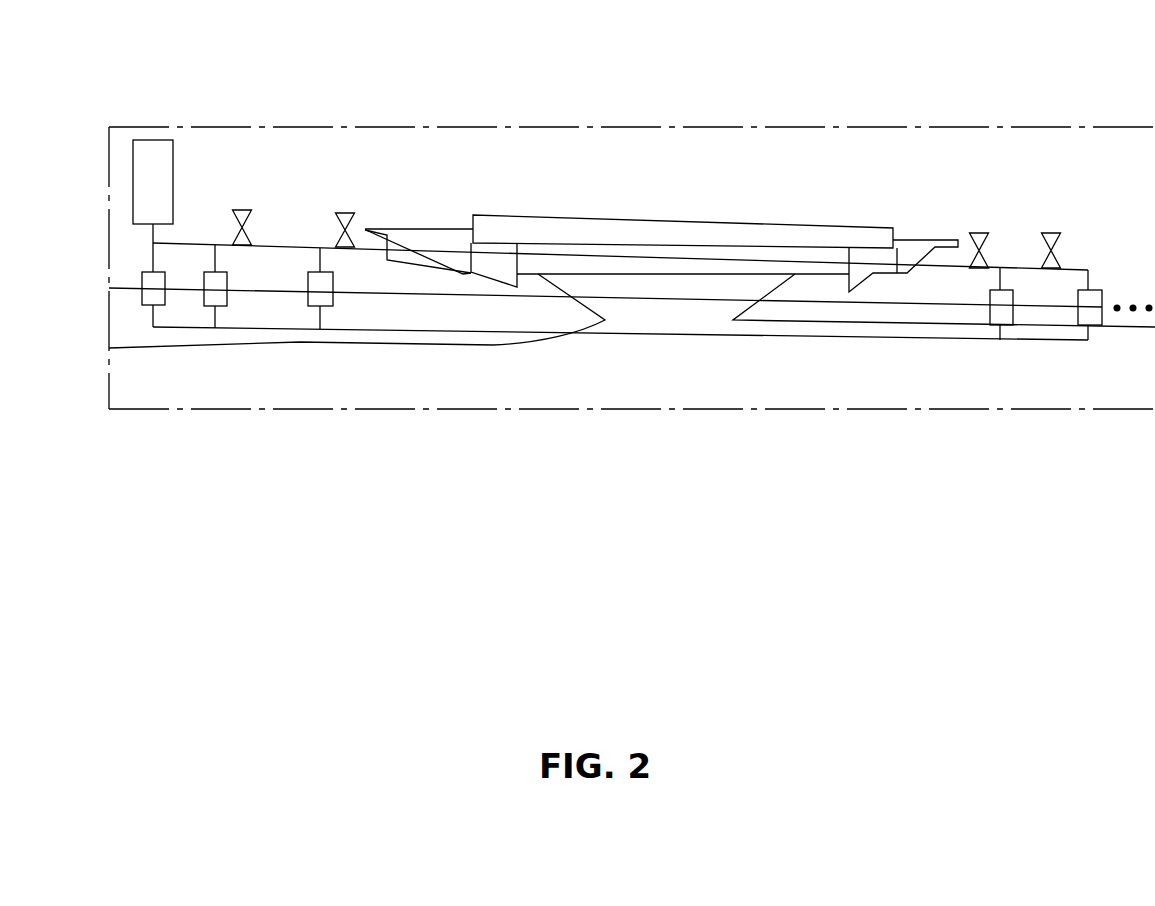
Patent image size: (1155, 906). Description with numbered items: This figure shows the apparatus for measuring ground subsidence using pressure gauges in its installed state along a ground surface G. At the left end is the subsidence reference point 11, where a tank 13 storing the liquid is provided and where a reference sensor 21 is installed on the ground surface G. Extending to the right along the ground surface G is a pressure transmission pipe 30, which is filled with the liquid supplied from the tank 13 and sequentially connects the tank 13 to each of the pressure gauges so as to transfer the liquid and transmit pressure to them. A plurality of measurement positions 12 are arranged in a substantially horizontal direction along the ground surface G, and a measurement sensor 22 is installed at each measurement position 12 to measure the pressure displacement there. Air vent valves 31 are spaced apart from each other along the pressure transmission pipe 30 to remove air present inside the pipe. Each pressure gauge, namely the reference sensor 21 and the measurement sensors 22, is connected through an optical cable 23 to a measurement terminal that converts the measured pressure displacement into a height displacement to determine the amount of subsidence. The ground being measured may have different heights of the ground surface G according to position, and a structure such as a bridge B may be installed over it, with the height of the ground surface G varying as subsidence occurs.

The subsidence reference point 11 is at (188, 243).
The measurement position 12 is at (320, 270).
The tank 13 is at (153, 140).
The reference sensor 21 is at (142, 298).
The measurement sensor 22 is at (228, 292).
The optical cable 23 is at (1047, 341).
The pressure transmission pipe 30 is at (600, 262).
The air vent valve 31 is at (241, 210).
The bridge B is at (702, 237).
The ground surface G is at (661, 298).